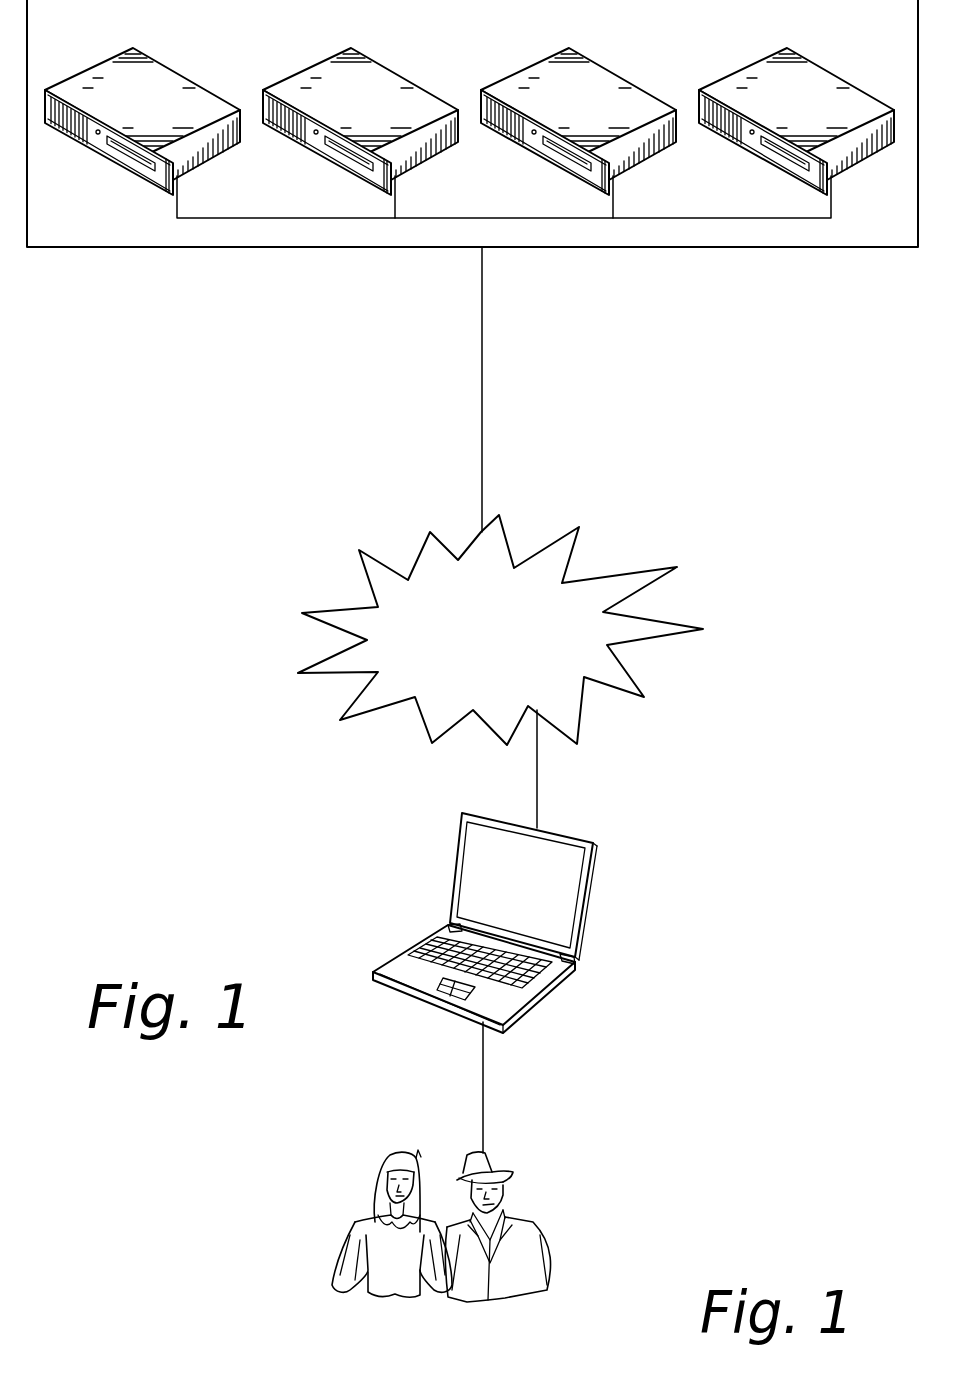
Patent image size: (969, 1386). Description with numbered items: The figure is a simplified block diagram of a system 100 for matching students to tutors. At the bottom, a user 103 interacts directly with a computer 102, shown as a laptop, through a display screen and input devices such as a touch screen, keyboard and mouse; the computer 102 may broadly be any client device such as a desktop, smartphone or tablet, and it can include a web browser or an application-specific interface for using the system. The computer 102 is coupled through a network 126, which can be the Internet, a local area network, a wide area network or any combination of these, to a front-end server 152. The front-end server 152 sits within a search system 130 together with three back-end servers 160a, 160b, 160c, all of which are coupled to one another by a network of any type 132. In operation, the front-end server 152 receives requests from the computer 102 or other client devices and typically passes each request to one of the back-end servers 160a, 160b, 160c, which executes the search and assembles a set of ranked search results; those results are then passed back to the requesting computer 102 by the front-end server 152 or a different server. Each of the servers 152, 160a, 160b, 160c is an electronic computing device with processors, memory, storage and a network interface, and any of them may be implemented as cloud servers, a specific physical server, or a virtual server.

The system 100 is at (813, 1213).
The computer 102 is at (536, 899).
The user 103 is at (347, 1180).
The network 126 is at (504, 642).
The search system 130 is at (728, 34).
The network 132 is at (117, 216).
The front-end server 152 is at (815, 114).
The back-end server 160a is at (609, 114).
The back-end server 160b is at (392, 114).
The back-end server 160c is at (173, 114).